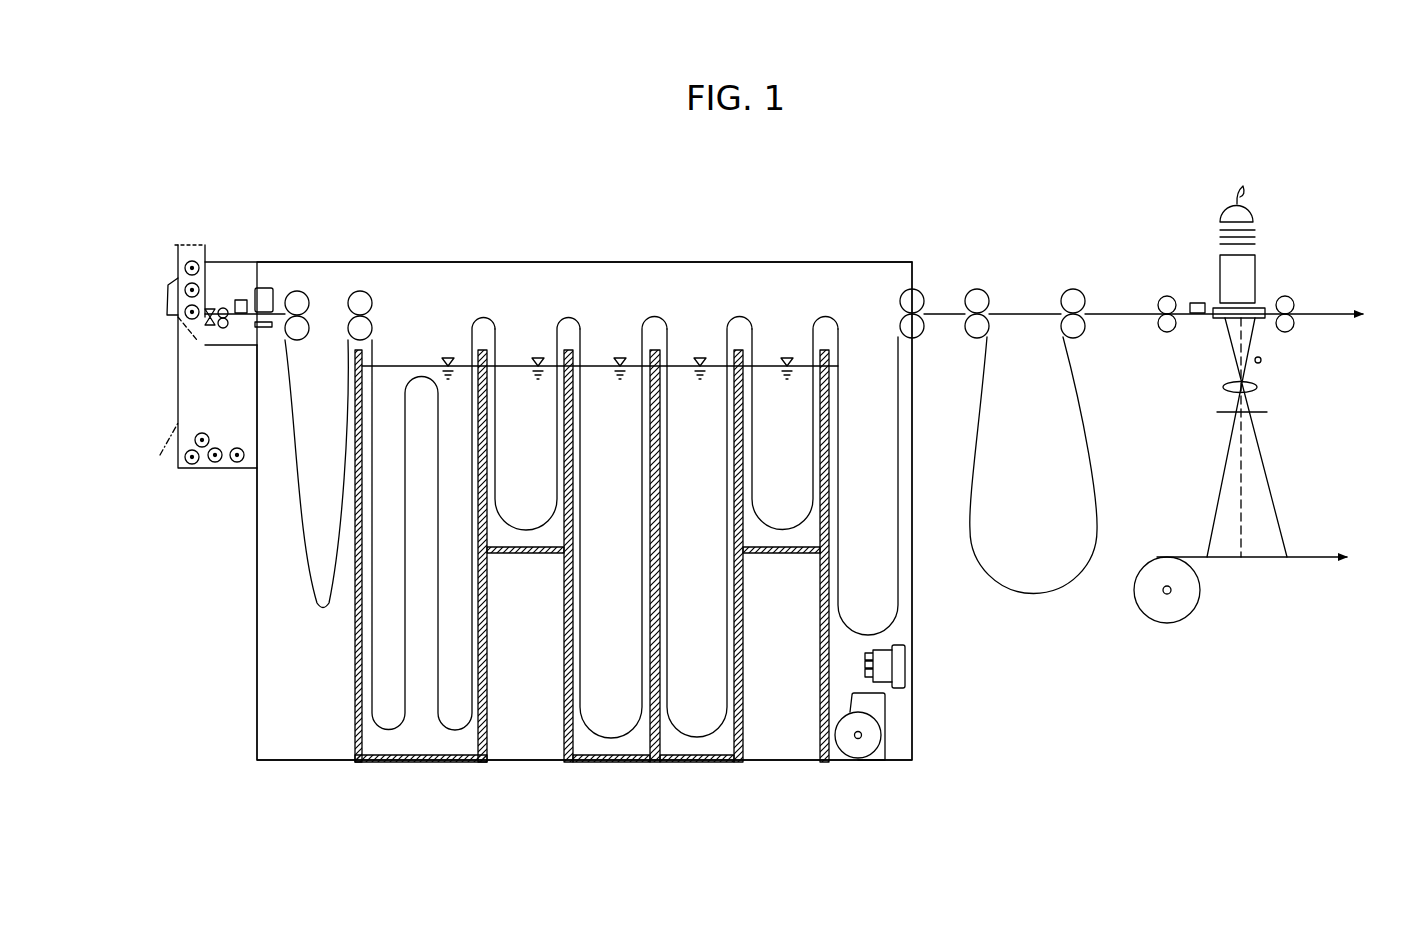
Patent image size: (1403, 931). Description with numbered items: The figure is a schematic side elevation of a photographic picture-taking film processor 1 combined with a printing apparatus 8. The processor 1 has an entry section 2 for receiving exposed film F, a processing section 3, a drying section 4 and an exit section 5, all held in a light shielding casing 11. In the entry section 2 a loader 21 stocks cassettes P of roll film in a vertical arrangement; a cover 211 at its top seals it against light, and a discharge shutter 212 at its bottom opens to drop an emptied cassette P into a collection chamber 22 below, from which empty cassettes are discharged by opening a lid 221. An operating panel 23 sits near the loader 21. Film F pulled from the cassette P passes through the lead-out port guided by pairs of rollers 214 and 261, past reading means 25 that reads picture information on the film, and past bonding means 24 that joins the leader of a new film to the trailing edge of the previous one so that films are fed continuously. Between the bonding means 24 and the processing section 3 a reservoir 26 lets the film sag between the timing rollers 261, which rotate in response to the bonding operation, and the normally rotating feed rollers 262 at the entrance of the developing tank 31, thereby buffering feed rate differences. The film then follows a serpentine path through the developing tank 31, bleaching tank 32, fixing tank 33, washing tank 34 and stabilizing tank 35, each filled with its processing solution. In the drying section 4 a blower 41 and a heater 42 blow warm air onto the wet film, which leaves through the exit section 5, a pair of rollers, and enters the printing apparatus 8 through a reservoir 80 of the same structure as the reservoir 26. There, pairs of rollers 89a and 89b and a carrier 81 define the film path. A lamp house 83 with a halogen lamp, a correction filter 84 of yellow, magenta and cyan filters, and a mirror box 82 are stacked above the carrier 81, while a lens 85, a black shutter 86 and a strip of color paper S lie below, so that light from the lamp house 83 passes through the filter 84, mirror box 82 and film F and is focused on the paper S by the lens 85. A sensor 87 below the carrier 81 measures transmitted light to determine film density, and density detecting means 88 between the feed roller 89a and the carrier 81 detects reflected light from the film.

The photographic picture-taking film processor 1 is at (528, 290).
The entry section 2 is at (263, 252).
The processing section 3 is at (608, 292).
The drying section 4 is at (878, 497).
The exit section 5 is at (930, 290).
The printing apparatus 8 is at (1175, 210).
The light shielding casing 11 is at (740, 262).
The loader 21 is at (205, 263).
The collection chamber 22 is at (225, 466).
The operating panel 23 is at (167, 300).
The bonding means 24 is at (270, 290).
The reading means 25 is at (250, 312).
The reservoir 26 is at (336, 497).
The developing tank 31 is at (425, 760).
The bleaching tank 32 is at (535, 553).
The fixing tank 33 is at (620, 758).
The washing tank 34 is at (712, 758).
The stabilizing tank 35 is at (800, 553).
The blower 41 is at (870, 745).
The heater 42 is at (900, 665).
The reservoir 80 is at (1050, 497).
The carrier 81 is at (1265, 318).
The mirror box 82 is at (1256, 278).
The lamp house 83 is at (1252, 207).
The correction filter 84 is at (1258, 238).
The lens 85 is at (1226, 386).
The black shutter 86 is at (1217, 414).
The sensor 87 is at (1260, 364).
The density detecting means 88 is at (1197, 303).
The feed roller pair 89a is at (1160, 298).
The roller pair 89b is at (1292, 300).
The cover 211 is at (204, 243).
The discharge shutter 212 is at (190, 325).
The rollers 214 is at (212, 310).
The lid 221 is at (158, 457).
The timing rollers 261 is at (300, 300).
The feed rollers 262 is at (362, 303).
The cassette P is at (178, 262).
The photographic film F is at (310, 592).
The color paper S is at (1305, 560).